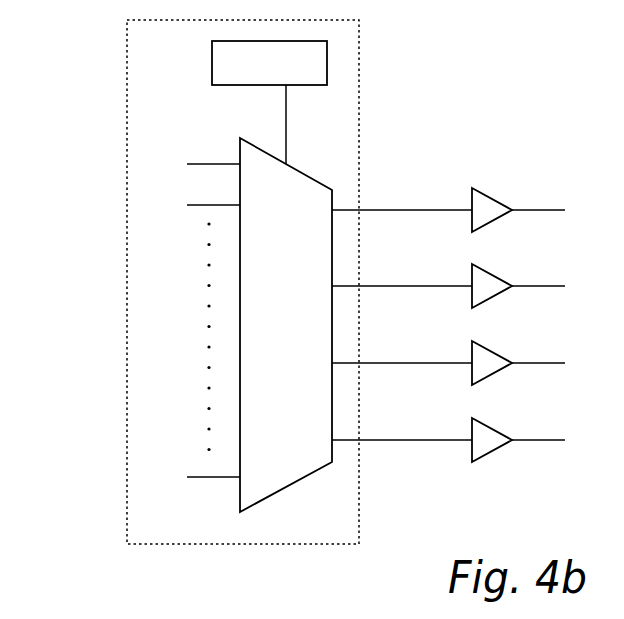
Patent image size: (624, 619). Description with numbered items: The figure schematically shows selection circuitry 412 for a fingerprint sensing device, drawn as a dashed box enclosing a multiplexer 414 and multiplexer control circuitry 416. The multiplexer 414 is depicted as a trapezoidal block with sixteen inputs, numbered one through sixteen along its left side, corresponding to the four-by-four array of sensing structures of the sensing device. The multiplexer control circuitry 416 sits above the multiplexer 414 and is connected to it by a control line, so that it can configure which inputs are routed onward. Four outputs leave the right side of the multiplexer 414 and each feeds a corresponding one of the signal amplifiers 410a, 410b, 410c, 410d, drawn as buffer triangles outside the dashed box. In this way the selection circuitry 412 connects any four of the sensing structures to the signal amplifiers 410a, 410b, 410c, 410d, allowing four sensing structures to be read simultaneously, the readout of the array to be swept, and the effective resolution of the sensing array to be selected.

The selection circuitry 412 is at (127, 113).
The multiplexer 414 is at (295, 483).
The multiplexer control circuitry 416 is at (328, 61).
The signal amplifier 410a is at (493, 196).
The signal amplifier 410b is at (493, 272).
The signal amplifier 410c is at (493, 349).
The signal amplifier 410d is at (493, 426).